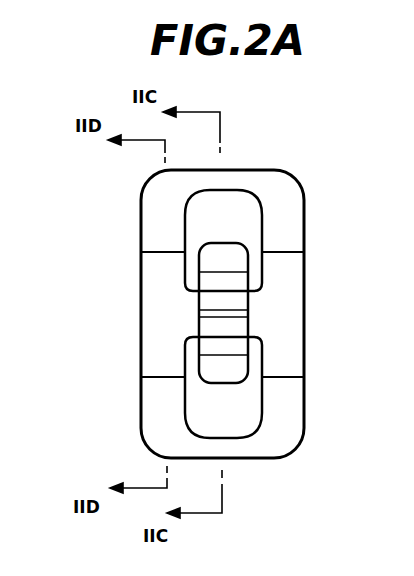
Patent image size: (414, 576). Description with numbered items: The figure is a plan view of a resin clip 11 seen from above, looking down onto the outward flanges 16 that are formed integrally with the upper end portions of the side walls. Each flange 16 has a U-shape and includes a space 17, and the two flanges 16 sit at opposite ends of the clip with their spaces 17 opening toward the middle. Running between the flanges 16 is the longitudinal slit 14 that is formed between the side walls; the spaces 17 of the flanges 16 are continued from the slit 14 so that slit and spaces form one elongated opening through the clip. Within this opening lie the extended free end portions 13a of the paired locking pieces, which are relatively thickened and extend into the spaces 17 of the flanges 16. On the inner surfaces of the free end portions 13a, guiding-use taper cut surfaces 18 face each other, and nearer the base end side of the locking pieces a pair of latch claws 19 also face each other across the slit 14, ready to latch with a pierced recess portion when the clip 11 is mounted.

The resin clip 11 is at (118, 291).
The extended free end portion 13a is at (207, 248).
The longitudinal slit 14 is at (192, 262).
The outward flange 16 is at (275, 177).
The space 17 is at (250, 202).
The guiding-use taper cut surface 18 is at (247, 284).
The latch claw 19 is at (207, 322).